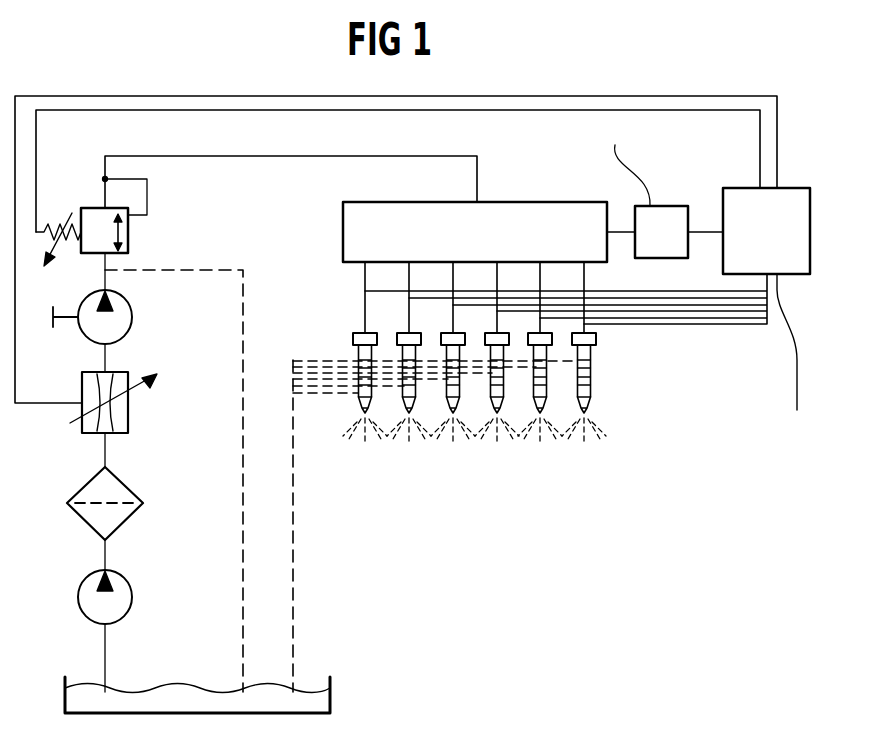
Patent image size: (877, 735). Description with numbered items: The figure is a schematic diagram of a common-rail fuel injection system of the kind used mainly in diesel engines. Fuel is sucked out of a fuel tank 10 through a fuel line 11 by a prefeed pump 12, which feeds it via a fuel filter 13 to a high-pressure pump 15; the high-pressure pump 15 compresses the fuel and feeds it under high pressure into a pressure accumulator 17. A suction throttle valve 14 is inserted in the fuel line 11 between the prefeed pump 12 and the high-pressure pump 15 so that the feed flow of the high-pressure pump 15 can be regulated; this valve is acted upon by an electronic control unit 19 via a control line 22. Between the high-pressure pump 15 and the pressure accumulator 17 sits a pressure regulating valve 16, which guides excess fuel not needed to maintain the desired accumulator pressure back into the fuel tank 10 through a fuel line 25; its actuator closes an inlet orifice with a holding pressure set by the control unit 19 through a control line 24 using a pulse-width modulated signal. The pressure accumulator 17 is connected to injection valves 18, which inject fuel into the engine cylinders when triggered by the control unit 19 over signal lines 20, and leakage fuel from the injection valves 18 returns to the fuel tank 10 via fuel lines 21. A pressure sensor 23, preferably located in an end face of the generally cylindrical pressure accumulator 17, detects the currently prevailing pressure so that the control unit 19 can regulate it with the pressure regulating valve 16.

The fuel tank 10 is at (332, 698).
The fuel line 11 is at (107, 649).
The prefeed pump 12 is at (82, 607).
The fuel filter 13 is at (92, 522).
The suction throttle valve 14 is at (83, 434).
The high-pressure pump 15 is at (92, 337).
The pressure regulating valve 16 is at (128, 250).
The pressure accumulator 17 is at (548, 212).
The injection valves 18 is at (592, 375).
The electronic control unit 19 is at (788, 275).
The signal lines 20 is at (718, 327).
The fuel lines 21 is at (294, 523).
The control line 22 is at (778, 135).
The pressure sensor 23 is at (663, 206).
The control line 24 is at (326, 111).
The fuel line 25 is at (243, 545).